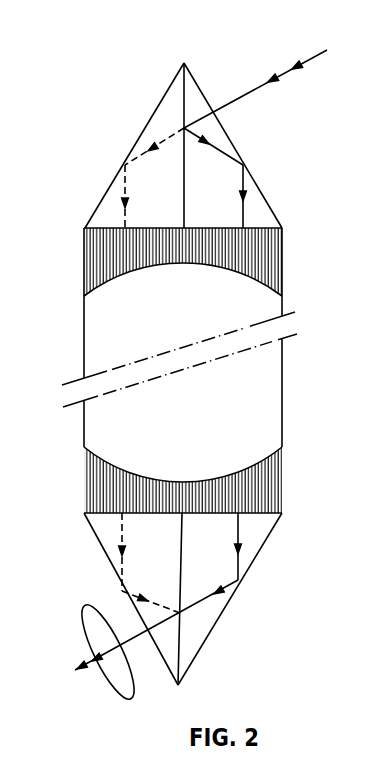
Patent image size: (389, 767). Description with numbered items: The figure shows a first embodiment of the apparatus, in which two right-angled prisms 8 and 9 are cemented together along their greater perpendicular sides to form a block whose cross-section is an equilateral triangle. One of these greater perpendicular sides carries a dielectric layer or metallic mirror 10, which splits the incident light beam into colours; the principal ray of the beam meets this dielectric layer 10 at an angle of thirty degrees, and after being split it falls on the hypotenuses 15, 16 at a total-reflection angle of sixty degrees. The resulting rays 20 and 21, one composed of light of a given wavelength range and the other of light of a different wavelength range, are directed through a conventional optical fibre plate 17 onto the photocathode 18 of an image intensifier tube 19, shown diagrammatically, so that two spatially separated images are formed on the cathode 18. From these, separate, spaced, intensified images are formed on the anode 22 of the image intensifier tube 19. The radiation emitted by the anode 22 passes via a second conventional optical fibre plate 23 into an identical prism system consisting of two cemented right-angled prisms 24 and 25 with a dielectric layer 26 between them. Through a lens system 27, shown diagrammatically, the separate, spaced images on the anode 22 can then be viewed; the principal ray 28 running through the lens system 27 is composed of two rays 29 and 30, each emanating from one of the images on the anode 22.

The right-angled prism 8 is at (263, 203).
The right-angled prism 9 is at (115, 190).
The dielectric layer or metallic mirror 10 is at (185, 98).
The hypotenuse 15 is at (227, 133).
The hypotenuse 16 is at (146, 131).
The optical fibre plate 17 is at (288, 241).
The photocathode 18 is at (205, 268).
The image intensifier tube 19 is at (83, 317).
The ray 20 is at (128, 219).
The ray 21 is at (242, 189).
The anode 22 is at (165, 478).
The optical fibre plate 23 is at (246, 477).
The right-angled prism 24 is at (110, 542).
The right-angled prism 25 is at (252, 538).
The dielectric layer 26 is at (182, 625).
The lens system 27 is at (135, 697).
The principal ray 28 is at (132, 642).
The ray 29 is at (124, 537).
The ray 30 is at (238, 522).